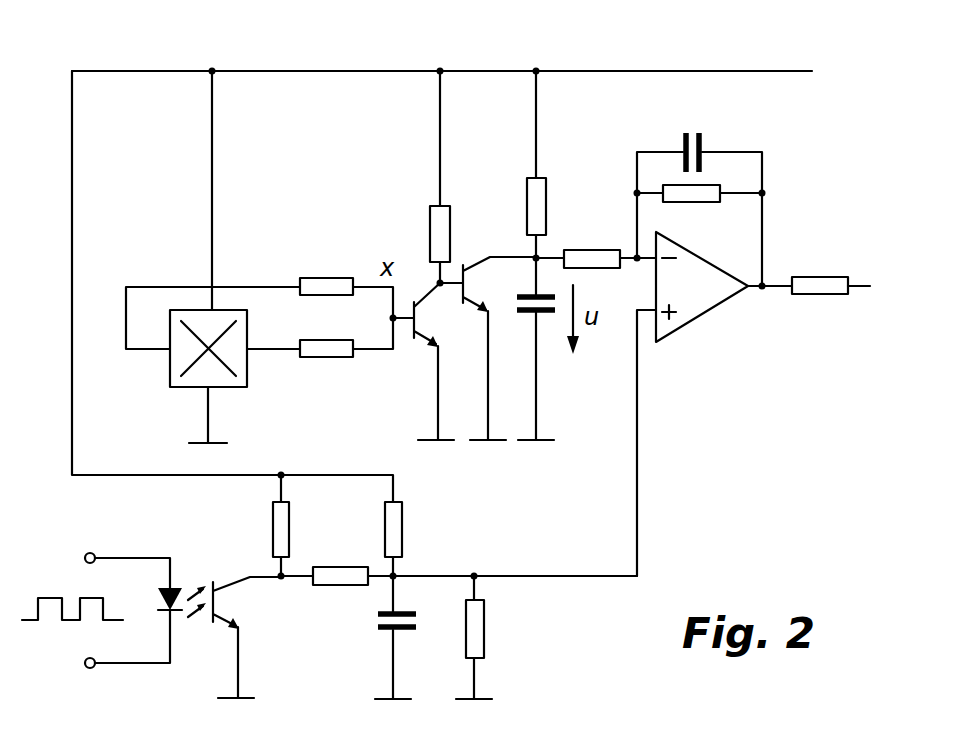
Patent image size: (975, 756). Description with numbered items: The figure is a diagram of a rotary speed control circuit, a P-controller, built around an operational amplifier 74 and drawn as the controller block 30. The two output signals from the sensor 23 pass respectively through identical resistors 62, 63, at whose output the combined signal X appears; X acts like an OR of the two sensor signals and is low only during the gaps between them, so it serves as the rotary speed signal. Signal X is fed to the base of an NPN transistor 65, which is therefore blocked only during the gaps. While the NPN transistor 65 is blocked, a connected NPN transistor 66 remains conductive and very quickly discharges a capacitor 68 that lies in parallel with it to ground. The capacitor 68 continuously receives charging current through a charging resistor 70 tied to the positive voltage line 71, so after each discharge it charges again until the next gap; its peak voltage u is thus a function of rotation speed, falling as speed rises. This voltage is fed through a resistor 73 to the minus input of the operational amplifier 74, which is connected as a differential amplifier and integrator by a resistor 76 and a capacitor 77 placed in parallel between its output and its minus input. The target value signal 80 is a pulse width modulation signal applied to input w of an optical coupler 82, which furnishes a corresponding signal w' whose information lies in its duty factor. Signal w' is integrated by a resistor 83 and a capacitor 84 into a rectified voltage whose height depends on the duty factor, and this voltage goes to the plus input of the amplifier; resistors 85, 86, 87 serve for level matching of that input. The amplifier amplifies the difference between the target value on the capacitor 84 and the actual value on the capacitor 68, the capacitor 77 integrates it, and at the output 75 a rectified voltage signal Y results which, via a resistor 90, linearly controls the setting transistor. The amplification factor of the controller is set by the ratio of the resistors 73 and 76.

The sensor 23 is at (222, 378).
The integrator circuit 30 is at (701, 345).
The resistor 62 is at (333, 278).
The resistor 63 is at (330, 357).
The NPN transistor 65 is at (421, 326).
The NPN transistor 66 is at (465, 300).
The capacitor 68 is at (520, 312).
The charging resistor 70 is at (527, 205).
The positive voltage line 71 is at (650, 71).
The resistor 73 is at (590, 258).
The operational amplifier 74 is at (700, 305).
The output 75 is at (765, 295).
The resistor 76 is at (700, 202).
The capacitor 77 is at (704, 146).
The target value signal 80 is at (67, 620).
The optical coupler 82 is at (218, 552).
The resistor 83 is at (343, 585).
The capacitor 84 is at (405, 632).
The resistor 85 is at (289, 527).
The resistor 86 is at (403, 525).
The resistor 87 is at (484, 632).
The resistor 90 is at (830, 295).